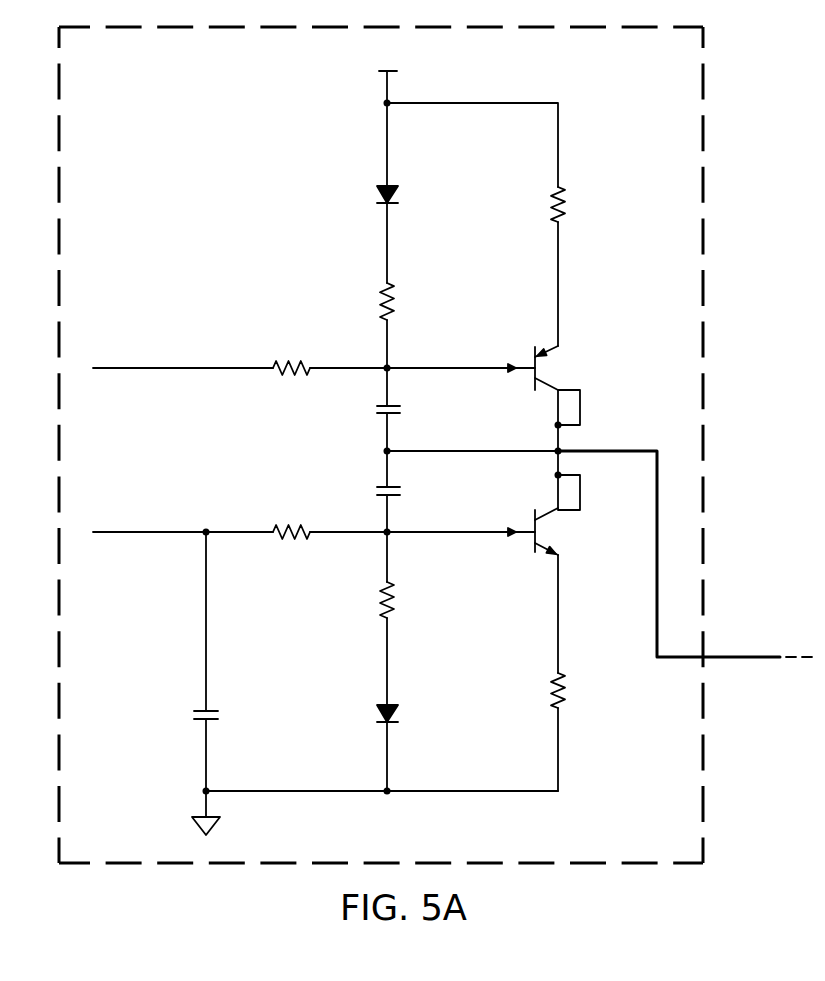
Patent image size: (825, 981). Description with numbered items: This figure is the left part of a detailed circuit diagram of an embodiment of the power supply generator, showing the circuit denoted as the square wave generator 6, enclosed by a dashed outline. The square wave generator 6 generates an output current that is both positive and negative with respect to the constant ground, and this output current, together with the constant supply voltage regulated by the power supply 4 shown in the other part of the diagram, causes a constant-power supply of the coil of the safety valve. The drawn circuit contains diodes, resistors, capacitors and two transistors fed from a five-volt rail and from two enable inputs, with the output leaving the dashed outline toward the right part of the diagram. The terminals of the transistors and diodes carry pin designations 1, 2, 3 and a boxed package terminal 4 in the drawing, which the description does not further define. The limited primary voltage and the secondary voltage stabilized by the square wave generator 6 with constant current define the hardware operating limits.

The square wave generator 6 is at (438, 445).
The pin 1 (base / cathode terminal) 1 is at (449, 471).
The pin 2 (collector / anode terminal) 2 is at (460, 445).
The pin 3 (emitter terminal) 3 is at (546, 449).
The power supply 4 is at (569, 450).